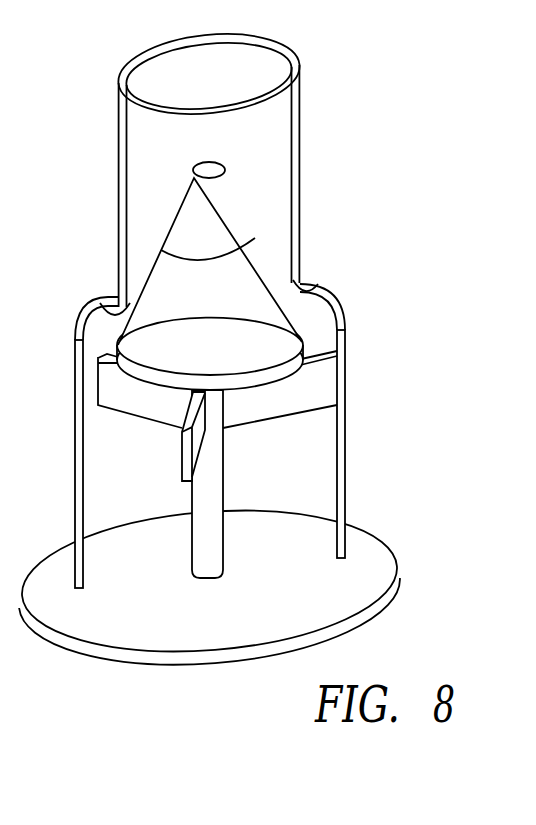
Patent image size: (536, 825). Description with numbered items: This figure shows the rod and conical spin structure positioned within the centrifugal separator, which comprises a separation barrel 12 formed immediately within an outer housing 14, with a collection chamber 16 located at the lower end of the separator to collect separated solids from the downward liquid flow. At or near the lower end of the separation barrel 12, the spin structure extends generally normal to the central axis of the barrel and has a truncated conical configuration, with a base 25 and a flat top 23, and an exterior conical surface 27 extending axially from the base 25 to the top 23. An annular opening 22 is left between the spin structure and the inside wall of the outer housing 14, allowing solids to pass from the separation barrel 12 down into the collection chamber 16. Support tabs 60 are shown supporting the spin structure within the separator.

The separation barrel 12 is at (157, 169).
The outer housing 14 is at (345, 430).
The collection chamber 16 is at (298, 475).
The annular opening 22 is at (100, 300).
The top 23 is at (213, 162).
The base 25 is at (320, 342).
The exterior conical surface 27 is at (207, 342).
The support tabs 60 is at (105, 378).